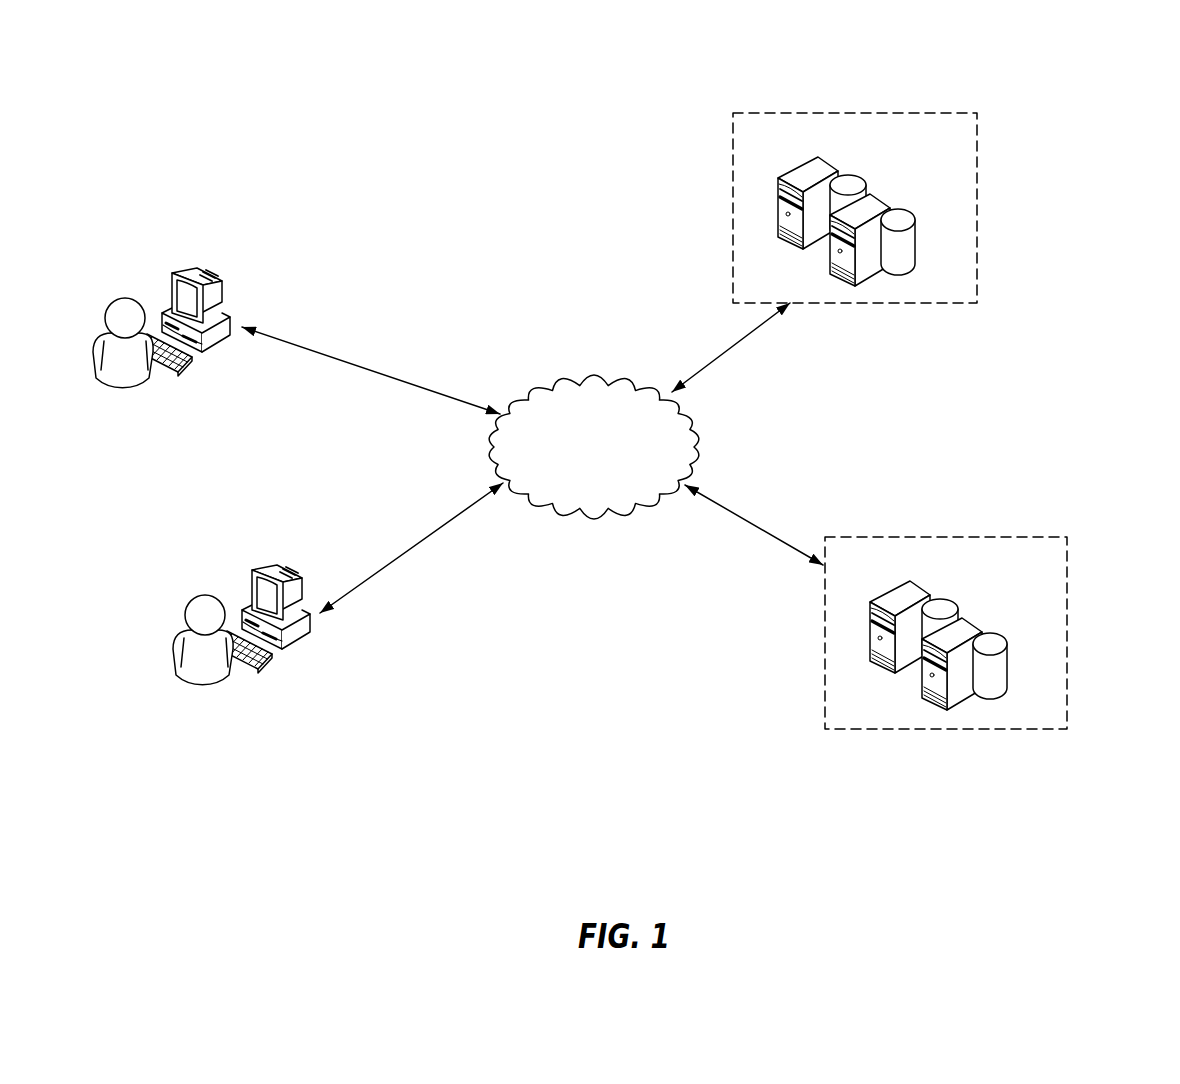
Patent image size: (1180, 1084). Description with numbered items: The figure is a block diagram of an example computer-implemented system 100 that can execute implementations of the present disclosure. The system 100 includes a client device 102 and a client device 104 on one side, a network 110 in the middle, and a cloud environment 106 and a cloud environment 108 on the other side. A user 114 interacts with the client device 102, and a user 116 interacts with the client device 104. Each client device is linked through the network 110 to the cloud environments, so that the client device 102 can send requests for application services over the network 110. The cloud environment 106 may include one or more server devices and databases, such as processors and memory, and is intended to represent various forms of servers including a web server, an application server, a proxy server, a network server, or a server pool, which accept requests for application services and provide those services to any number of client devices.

The computer-implemented system 100 is at (181, 89).
The client device 102 is at (178, 272).
The client device 104 is at (258, 569).
The cloud environment 106 is at (977, 208).
The cloud environment 108 is at (1067, 634).
The network 110 is at (595, 378).
The user 114 is at (123, 389).
The user 116 is at (203, 686).